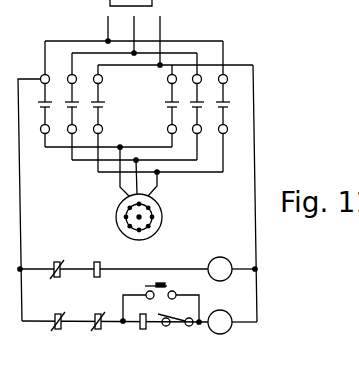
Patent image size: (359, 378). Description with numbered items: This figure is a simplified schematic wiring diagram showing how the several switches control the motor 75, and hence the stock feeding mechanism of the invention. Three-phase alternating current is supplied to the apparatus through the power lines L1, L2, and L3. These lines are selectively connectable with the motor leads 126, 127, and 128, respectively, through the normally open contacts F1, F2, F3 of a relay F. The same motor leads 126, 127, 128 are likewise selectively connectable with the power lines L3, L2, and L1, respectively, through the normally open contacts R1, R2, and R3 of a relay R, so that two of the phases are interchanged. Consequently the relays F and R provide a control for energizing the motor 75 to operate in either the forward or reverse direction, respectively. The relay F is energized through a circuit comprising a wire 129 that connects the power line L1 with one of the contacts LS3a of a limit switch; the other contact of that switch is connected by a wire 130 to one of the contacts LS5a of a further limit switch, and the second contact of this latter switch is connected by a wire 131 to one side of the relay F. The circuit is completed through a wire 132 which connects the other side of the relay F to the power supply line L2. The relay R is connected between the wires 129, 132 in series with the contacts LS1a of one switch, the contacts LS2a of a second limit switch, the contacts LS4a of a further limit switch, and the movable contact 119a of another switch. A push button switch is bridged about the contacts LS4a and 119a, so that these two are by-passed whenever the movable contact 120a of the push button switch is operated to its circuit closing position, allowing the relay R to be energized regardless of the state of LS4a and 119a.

The power line L1 is at (108, 23).
The power line L2 is at (134, 23).
The power line L3 is at (160, 34).
The normally open contact F1 is at (37, 104).
The normally open contact F2 is at (64, 104).
The normally open contact F3 is at (90, 104).
The normally open contact R1 is at (163, 104).
The normally open contact R2 is at (189, 104).
The normally open contact R3 is at (215, 104).
The motor lead 126 is at (120, 187).
The motor lead 127 is at (160, 181).
The motor lead 128 is at (157, 191).
The motor 75 is at (162, 212).
The wire 129 is at (20, 207).
The wire 132 is at (256, 234).
The wire 130 is at (77, 272).
The wire 131 is at (194, 268).
The contacts of switch LS1 LS1a is at (47, 330).
The contacts of limit switch LS2 LS2a is at (99, 331).
The contact of limit switch LS3 LS3a is at (55, 259).
The contacts of limit switch LS4 LS4a is at (135, 331).
The contact of limit switch LS5 LS5a is at (97, 259).
The movable contact of push button switch 120a is at (166, 286).
The movable contact of switch 119 119a is at (178, 327).
The relay F is at (232, 269).
The relay R is at (232, 322).